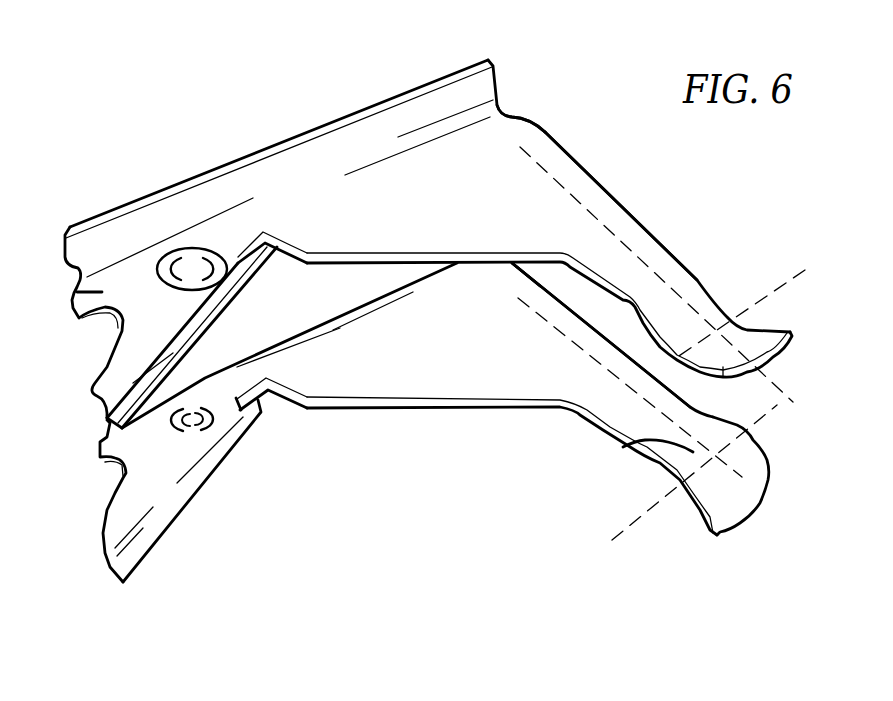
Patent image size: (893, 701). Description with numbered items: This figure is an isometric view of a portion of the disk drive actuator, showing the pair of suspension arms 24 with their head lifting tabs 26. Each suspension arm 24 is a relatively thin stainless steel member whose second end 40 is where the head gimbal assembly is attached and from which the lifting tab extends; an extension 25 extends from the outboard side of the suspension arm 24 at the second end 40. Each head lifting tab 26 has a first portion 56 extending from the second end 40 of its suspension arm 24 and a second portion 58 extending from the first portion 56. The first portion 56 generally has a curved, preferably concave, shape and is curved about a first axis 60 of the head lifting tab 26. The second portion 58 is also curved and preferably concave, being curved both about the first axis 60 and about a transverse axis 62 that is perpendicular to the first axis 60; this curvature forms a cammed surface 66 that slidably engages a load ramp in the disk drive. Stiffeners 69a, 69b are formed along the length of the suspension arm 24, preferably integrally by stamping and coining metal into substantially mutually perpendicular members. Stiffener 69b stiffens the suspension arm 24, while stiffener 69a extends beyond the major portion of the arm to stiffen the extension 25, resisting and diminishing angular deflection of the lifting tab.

The suspension arm 24 is at (78, 293).
The extension 25 is at (363, 193).
The head lifting tab 26 is at (602, 162).
The second end 40 is at (492, 58).
The first portion 56 is at (643, 222).
The second portion 58 is at (767, 333).
The first axis 60 is at (540, 133).
The transverse axis 62 is at (800, 275).
The cammed surface 66 is at (623, 447).
The stiffener 69a is at (440, 110).
The stiffener 69b is at (218, 318).